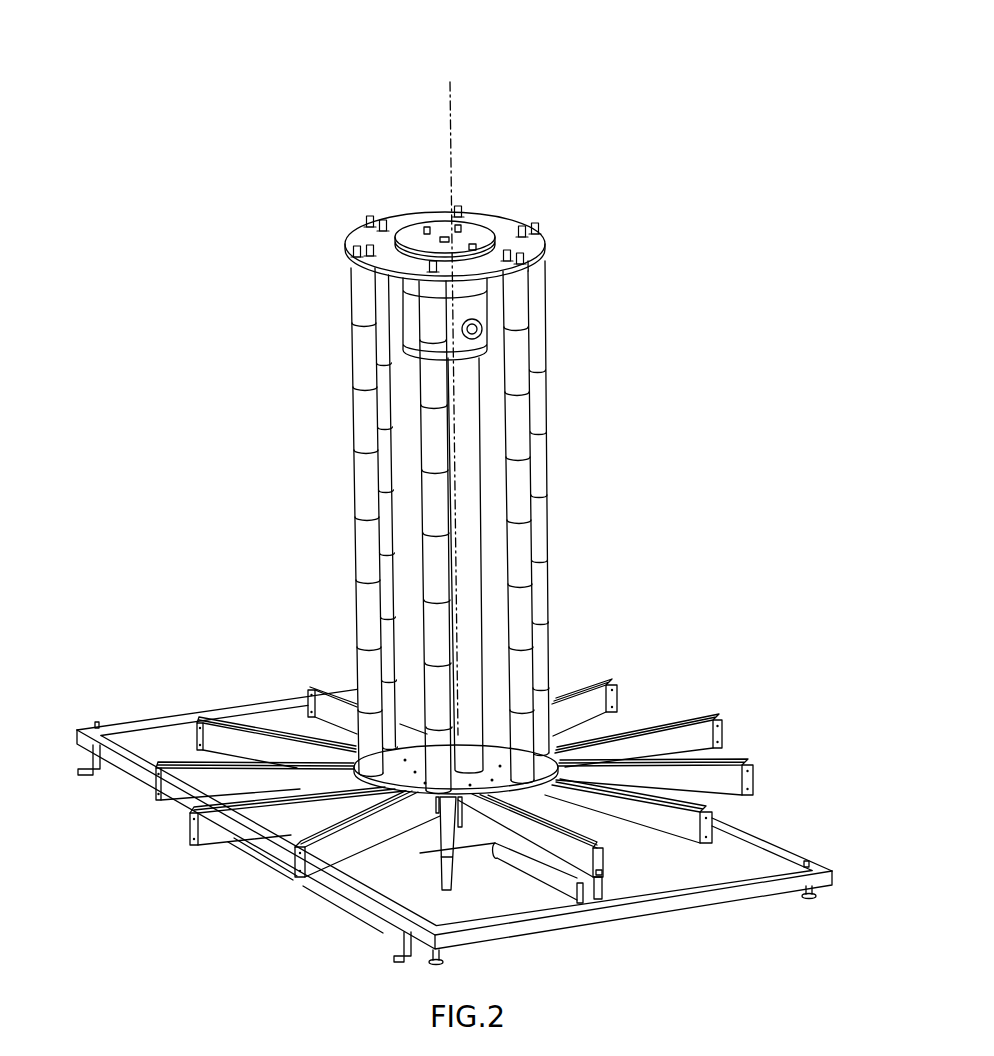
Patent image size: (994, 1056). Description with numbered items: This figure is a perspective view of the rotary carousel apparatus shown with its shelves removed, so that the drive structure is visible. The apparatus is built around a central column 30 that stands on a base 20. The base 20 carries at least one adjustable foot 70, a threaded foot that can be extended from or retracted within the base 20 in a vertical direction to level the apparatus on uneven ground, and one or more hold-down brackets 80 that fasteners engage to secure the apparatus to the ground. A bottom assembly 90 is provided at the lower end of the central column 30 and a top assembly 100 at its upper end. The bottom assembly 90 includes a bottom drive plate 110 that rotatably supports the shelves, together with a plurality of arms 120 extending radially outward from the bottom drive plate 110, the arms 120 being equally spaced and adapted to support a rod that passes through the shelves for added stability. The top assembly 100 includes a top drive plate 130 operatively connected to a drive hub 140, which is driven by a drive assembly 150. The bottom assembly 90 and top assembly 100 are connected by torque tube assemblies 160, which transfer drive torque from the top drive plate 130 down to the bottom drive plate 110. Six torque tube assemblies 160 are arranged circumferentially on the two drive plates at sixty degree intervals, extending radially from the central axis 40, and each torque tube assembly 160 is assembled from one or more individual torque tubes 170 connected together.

The top assembly 100 is at (360, 50).
The central axis 40 is at (452, 150).
The drive hub 140 is at (430, 225).
The top drive plate 130 is at (500, 226).
The drive assembly 150 is at (480, 305).
The torque tube assembly 160 is at (532, 403).
The torque tube 170 is at (370, 567).
The central column 30 is at (466, 587).
The bottom drive plate 110 is at (616, 705).
The arms 120 is at (754, 770).
The base 20 is at (758, 838).
The adjustable foot 70 is at (817, 893).
The hold-down bracket 80 is at (395, 958).
The bottom assembly 90 is at (481, 858).